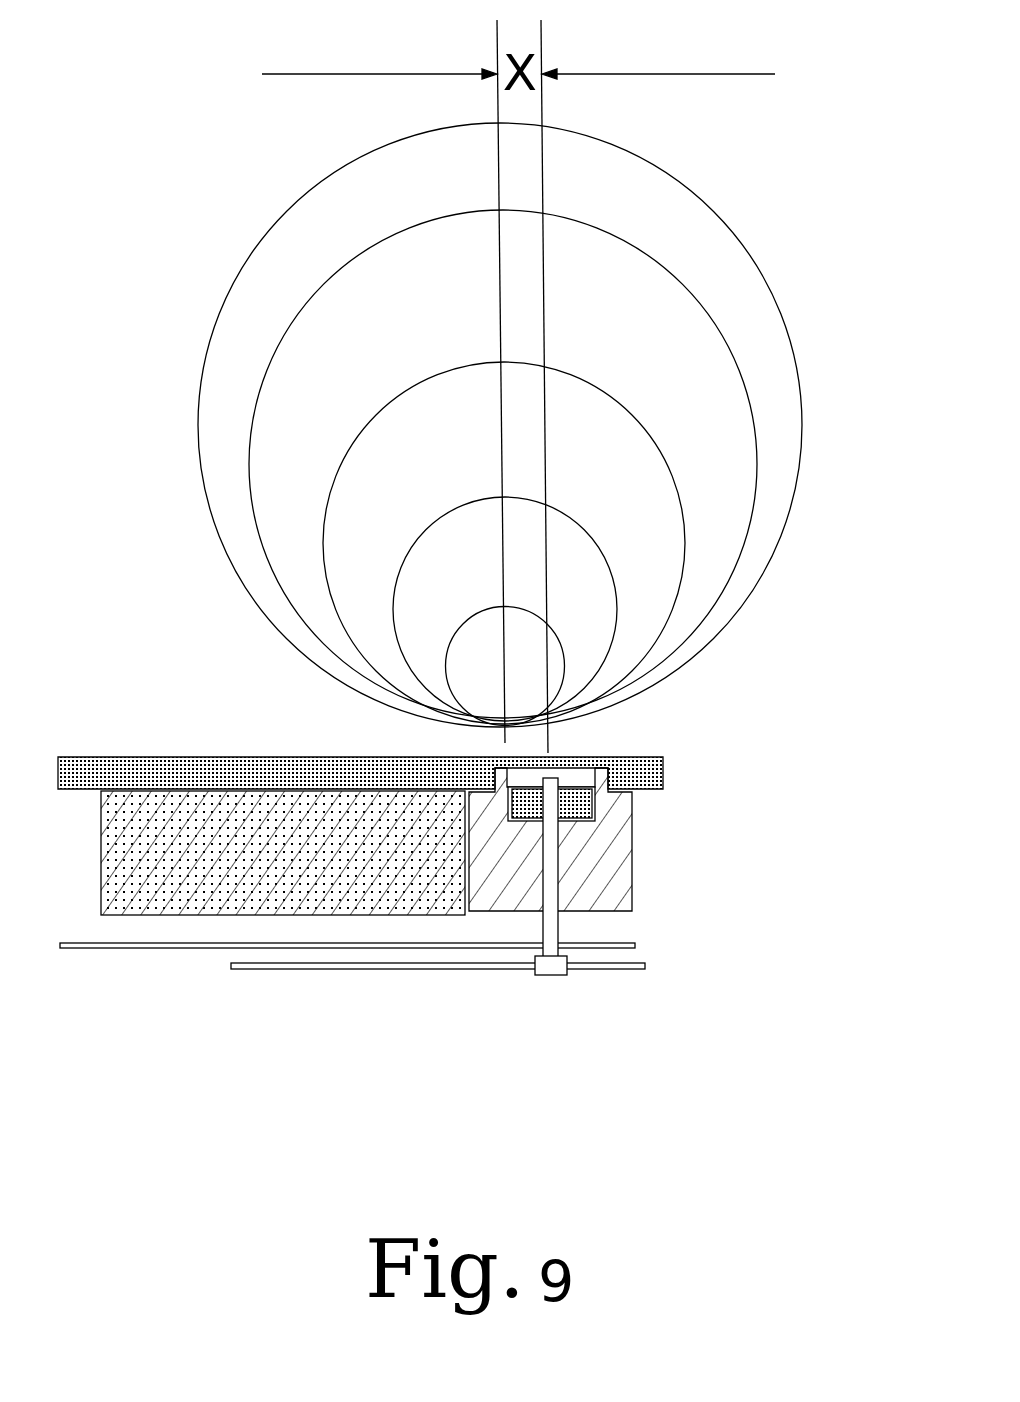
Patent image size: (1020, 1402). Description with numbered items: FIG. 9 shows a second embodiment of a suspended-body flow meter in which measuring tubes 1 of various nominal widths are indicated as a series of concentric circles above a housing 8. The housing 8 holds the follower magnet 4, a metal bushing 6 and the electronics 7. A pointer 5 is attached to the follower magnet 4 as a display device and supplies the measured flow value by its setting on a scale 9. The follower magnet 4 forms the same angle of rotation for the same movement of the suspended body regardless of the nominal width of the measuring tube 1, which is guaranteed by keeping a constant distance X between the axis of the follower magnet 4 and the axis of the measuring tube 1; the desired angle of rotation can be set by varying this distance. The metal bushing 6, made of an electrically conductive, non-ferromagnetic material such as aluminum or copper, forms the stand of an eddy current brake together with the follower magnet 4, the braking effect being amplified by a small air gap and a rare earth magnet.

The measuring tube 1 is at (560, 685).
The follower magnet 4 is at (592, 808).
The pointer 5 is at (632, 969).
The metal bushing 6 is at (622, 895).
The electronics 7 is at (215, 803).
The housing 8 is at (85, 762).
The scale 9 is at (110, 950).